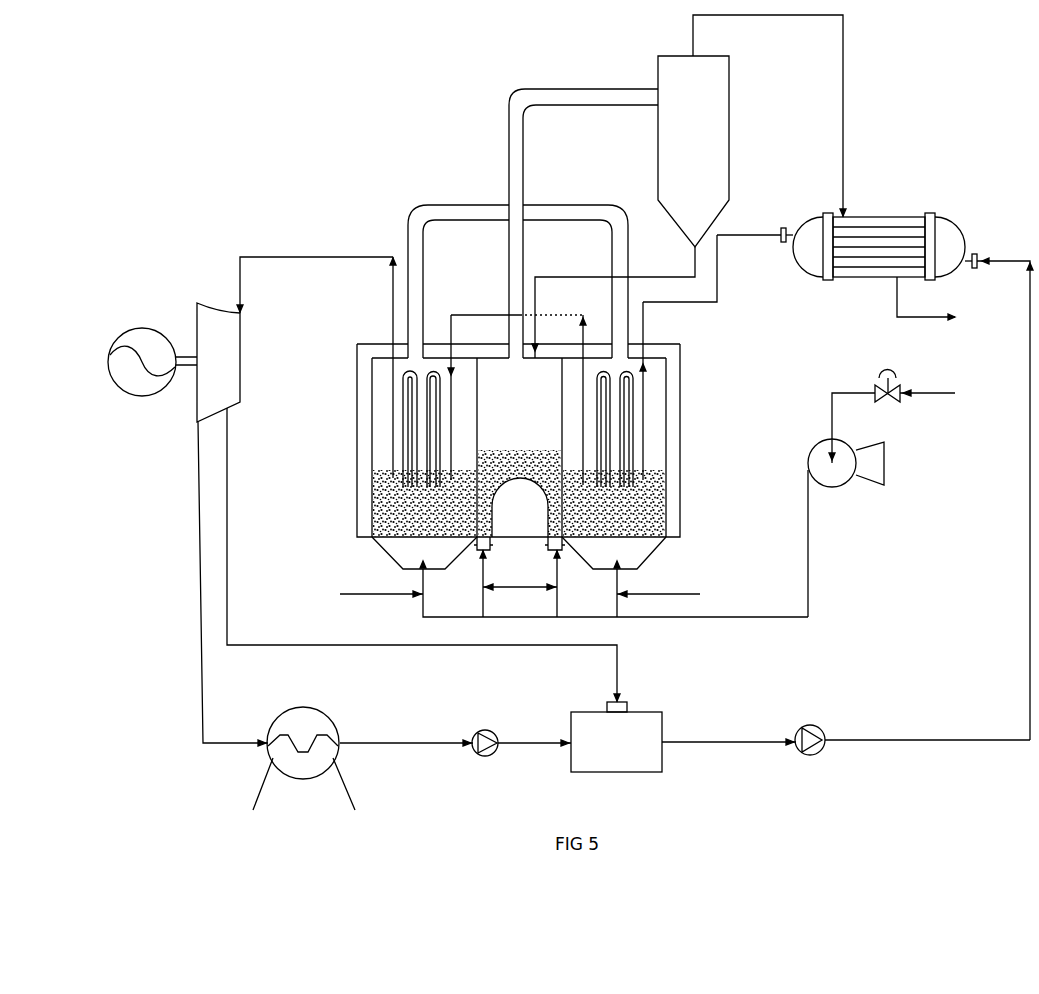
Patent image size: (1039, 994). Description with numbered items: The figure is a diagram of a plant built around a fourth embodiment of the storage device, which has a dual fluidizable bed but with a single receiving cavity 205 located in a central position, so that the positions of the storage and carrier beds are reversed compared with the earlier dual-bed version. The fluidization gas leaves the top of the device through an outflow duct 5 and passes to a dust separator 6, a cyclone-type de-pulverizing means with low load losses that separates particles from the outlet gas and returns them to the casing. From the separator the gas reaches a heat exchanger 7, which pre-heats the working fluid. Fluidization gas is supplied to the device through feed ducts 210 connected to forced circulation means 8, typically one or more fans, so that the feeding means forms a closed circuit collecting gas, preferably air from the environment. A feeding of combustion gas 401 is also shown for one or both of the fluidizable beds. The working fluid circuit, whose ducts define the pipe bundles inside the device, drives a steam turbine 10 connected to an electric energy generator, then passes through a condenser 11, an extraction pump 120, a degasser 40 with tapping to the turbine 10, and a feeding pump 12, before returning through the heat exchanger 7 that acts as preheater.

The outflow duct 5 is at (525, 168).
The dust separator 6 is at (710, 116).
The heat exchanger 7 is at (953, 230).
The forced circulation means 8 is at (837, 487).
The steam turbine 10 is at (223, 330).
The condenser 11 is at (303, 765).
The feeding pump 12 is at (808, 755).
The degasser 40 is at (619, 755).
The extraction pump 120 is at (488, 758).
The receiving cavity 205 is at (538, 519).
The feed ducts 210 is at (718, 622).
The feeding of combustion gas 401 is at (418, 595).